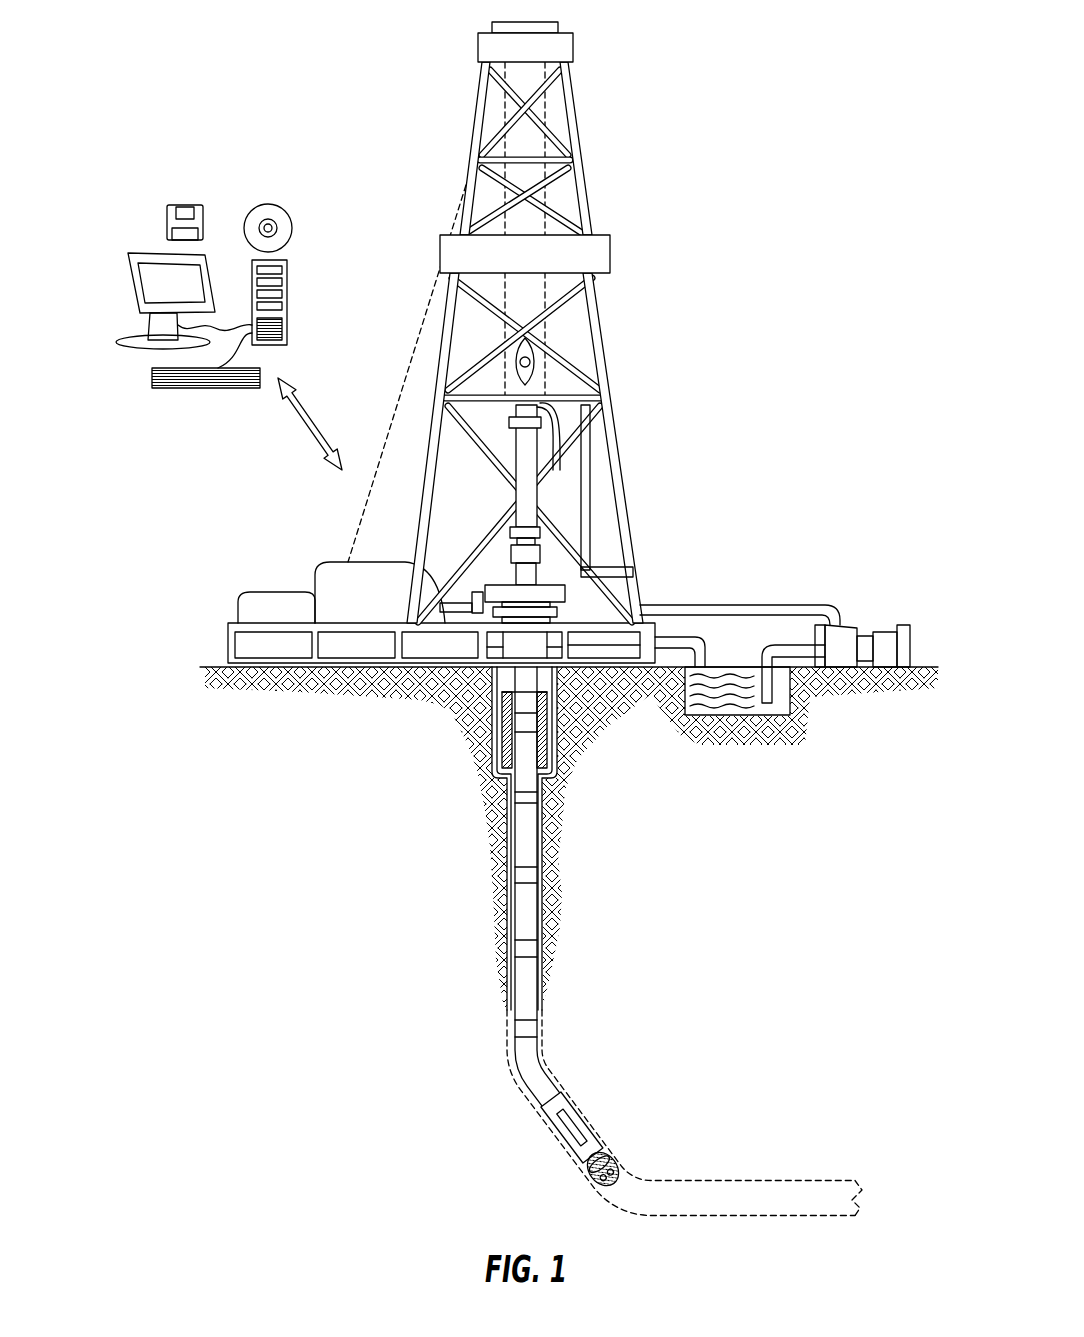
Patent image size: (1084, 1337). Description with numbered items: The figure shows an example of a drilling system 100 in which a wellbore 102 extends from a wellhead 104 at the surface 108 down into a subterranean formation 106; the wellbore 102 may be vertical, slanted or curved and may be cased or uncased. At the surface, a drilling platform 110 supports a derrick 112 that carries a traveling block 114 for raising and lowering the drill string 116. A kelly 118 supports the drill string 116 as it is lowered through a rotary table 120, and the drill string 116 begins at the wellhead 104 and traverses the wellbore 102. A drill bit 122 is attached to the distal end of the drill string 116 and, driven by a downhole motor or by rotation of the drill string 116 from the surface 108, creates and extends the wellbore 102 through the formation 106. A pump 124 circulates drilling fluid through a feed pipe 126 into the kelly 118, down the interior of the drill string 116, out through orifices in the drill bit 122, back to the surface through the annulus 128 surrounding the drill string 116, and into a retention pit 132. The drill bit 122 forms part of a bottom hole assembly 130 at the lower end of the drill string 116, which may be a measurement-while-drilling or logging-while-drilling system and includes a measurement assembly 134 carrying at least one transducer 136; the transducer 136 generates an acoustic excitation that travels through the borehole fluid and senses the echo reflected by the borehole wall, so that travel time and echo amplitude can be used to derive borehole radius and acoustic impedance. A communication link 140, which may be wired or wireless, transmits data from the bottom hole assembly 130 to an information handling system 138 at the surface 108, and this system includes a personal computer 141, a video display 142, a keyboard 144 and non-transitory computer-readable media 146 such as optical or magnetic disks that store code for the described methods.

The drilling system 100 is at (846, 124).
The wellbore 102 is at (543, 882).
The wellhead 104 is at (574, 610).
The subterranean formation 106 is at (770, 962).
The surface 108 is at (920, 666).
The drilling platform 110 is at (230, 641).
The derrick 112 is at (587, 173).
The traveling block 114 is at (547, 365).
The drill string 116 is at (543, 855).
The kelly 118 is at (523, 450).
The rotary table 120 is at (557, 580).
The drill bit 122 is at (623, 1160).
The pump 124 is at (832, 625).
The feed pipe 126 is at (762, 605).
The annulus 128 is at (509, 880).
The bottom hole assembly 130 is at (523, 1131).
The retention pit 132 is at (742, 737).
The measurement assembly 134 is at (569, 1098).
The transducer 136 is at (578, 1130).
The information handling system 138 is at (131, 190).
The communication link 140 is at (302, 430).
The personal computer 141 is at (290, 274).
The video display 142 is at (131, 293).
The keyboard 144 is at (163, 389).
The non-transitory computer-readable media 146 is at (262, 205).